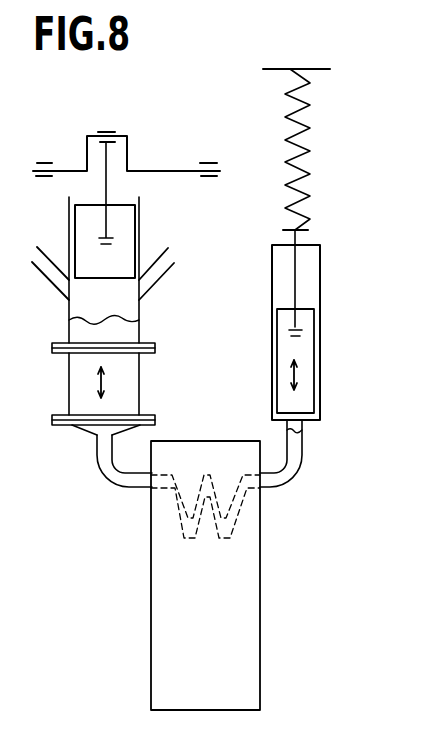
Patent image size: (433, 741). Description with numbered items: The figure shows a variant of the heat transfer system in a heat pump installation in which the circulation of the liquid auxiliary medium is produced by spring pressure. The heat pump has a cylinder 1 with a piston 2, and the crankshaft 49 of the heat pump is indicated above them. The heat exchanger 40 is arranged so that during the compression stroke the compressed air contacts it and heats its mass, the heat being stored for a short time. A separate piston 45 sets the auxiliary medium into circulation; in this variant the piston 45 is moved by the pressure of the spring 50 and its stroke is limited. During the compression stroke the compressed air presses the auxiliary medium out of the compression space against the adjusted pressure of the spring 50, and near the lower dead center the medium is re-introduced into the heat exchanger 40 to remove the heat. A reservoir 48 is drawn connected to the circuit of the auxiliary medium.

The crankshaft 49 is at (165, 169).
The piston 2 is at (130, 229).
The cylinder 1 is at (131, 328).
The heat exchanger 40 is at (130, 380).
The reservoir tank 48 is at (167, 608).
The piston 45 is at (310, 362).
The spring 50 is at (308, 135).